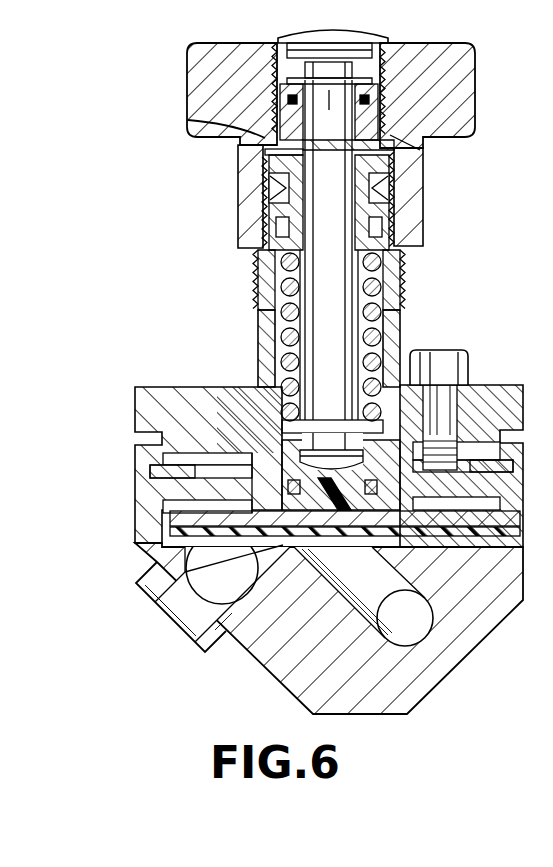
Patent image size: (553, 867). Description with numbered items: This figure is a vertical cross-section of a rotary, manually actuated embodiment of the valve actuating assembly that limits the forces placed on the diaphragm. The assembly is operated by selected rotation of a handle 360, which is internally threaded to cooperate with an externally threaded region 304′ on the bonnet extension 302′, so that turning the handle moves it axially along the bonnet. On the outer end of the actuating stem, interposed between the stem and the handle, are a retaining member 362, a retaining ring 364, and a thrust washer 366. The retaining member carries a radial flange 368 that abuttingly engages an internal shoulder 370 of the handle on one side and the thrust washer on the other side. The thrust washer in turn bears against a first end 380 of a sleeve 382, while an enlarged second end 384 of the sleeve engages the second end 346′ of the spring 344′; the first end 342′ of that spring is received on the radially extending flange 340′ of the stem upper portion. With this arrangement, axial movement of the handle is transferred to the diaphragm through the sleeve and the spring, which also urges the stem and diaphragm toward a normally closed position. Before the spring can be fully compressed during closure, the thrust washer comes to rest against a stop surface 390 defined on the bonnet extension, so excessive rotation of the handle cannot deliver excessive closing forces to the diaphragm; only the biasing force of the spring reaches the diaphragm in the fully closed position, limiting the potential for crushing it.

The handle 360 is at (478, 55).
The retaining member 362 is at (297, 75).
The retaining ring 364 is at (275, 98).
The thrust washer 366 is at (243, 148).
The radial flange 368 is at (188, 121).
The internal shoulder 370 is at (397, 144).
The first end of sleeve 380 is at (262, 175).
The sleeve 382 is at (264, 214).
The enlarged second end of sleeve 384 is at (394, 241).
The stop surface 390 is at (400, 162).
The bonnet extension 302′ is at (263, 283).
The externally threaded region 304′ is at (398, 288).
The radially extending flange 340′ is at (243, 387).
The first end of spring 342′ is at (260, 361).
The spring 344′ is at (382, 337).
The second end of spring 346′ is at (382, 257).